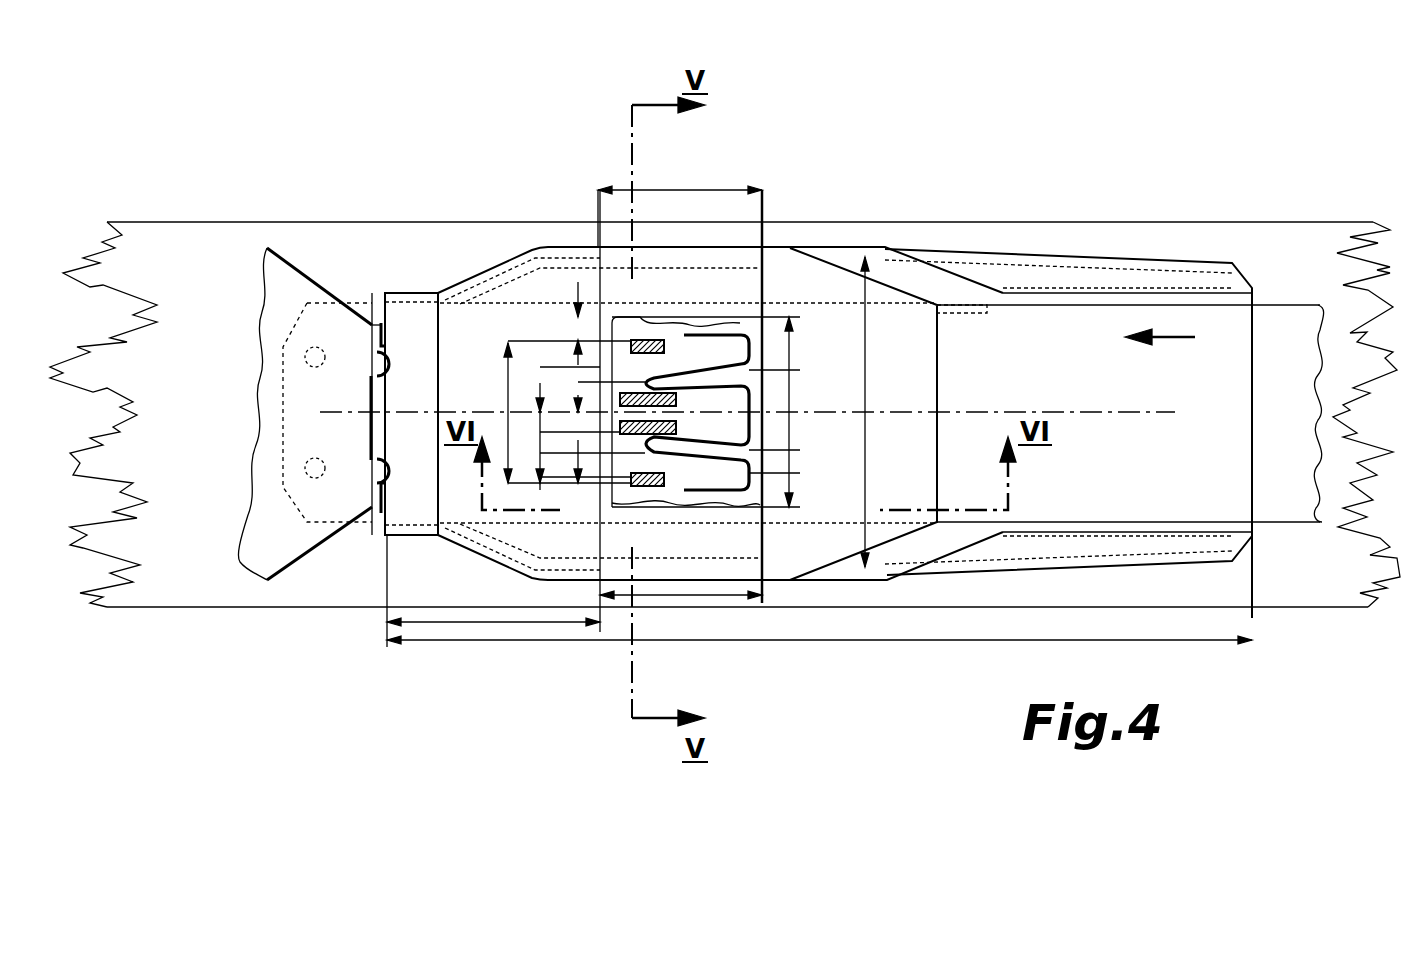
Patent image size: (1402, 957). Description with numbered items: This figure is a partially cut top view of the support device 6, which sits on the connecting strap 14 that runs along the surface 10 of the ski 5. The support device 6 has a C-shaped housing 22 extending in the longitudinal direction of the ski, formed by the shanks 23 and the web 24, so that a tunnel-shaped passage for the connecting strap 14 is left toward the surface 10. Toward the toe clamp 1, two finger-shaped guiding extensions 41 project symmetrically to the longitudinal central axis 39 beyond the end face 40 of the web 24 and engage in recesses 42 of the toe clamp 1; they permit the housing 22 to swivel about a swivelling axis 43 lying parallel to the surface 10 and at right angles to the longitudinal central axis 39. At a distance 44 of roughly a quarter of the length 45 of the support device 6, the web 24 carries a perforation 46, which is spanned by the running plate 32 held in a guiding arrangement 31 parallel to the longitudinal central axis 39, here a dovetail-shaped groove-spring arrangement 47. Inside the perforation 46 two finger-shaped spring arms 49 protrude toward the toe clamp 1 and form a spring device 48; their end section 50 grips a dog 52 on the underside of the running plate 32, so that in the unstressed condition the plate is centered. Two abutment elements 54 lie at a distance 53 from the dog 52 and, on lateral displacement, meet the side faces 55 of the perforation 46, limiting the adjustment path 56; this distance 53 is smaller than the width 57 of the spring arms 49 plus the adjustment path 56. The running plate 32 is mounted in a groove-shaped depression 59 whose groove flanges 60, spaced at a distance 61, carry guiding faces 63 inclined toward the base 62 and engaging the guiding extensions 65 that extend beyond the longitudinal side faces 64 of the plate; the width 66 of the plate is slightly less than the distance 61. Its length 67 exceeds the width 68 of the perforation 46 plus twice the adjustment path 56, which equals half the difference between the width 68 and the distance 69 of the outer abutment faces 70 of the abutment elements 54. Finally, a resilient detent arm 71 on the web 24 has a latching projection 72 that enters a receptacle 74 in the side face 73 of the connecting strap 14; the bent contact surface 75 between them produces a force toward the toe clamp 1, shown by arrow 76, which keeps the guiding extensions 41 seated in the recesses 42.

The toe clamp 1 is at (272, 272).
The ski 5 is at (1184, 232).
The support device 6 is at (562, 168).
The surface of the ski 10 is at (1140, 240).
The connecting strap 14 is at (362, 323).
The housing 22 is at (896, 228).
The shanks 23 is at (530, 288).
The web 24 is at (908, 252).
The guiding arrangement 31 is at (690, 345).
The running plate 32 is at (720, 283).
The longitudinal central axis 39 is at (1100, 413).
The end face of the web 40 is at (372, 520).
The guiding extensions 41 is at (370, 364).
The recesses 42 is at (372, 400).
The swivelling axis 43 is at (370, 330).
The distance 44 is at (440, 625).
The length of the support device 45 is at (600, 642).
The perforation 46 is at (745, 478).
The dovetail-shaped groove-spring arrangement 47 is at (588, 602).
The spring device 48 is at (778, 238).
The spring arms 49 is at (750, 368).
The end section 50 is at (610, 385).
The dog 52 is at (645, 398).
The distance 53 is at (540, 457).
The abutment elements 54 is at (640, 338).
The side faces of the perforation 55 is at (715, 190).
The adjustment path 56 is at (578, 330).
The width of the spring arms 57 is at (577, 443).
The groove-shaped depression 59 is at (700, 625).
The groove flanges 60 is at (758, 545).
The distance of the groove flanges 61 is at (695, 323).
The base of the depression 62 is at (614, 262).
The guiding faces 63 is at (595, 540).
The longitudinal side faces of the running plate 64 is at (780, 560).
The guiding extensions of the running plate 65 is at (592, 300).
The width of the running plate 66 is at (715, 597).
The length of the running plate 67 is at (870, 455).
The width of the perforation 68 is at (868, 386).
The distance of the outer abutment faces 69 is at (540, 400).
The outer abutment faces 70 is at (642, 337).
The detent arm 71 is at (972, 300).
The latching projection 72 is at (950, 300).
The side face 73 is at (1087, 250).
The receptacle 74 is at (952, 305).
The contact surface 75 is at (995, 250).
The arrow 76 is at (1188, 345).